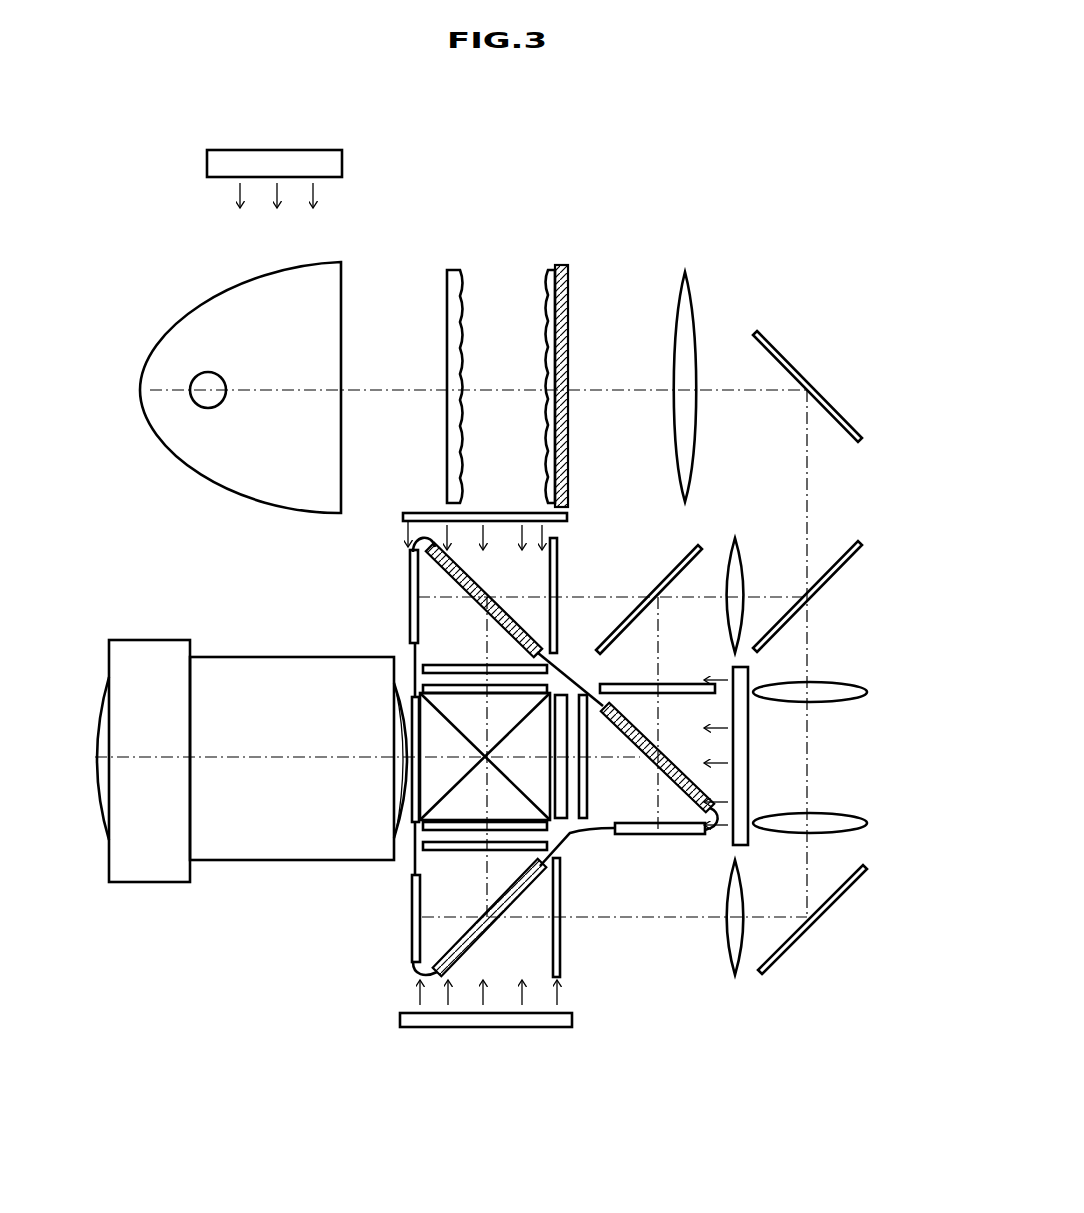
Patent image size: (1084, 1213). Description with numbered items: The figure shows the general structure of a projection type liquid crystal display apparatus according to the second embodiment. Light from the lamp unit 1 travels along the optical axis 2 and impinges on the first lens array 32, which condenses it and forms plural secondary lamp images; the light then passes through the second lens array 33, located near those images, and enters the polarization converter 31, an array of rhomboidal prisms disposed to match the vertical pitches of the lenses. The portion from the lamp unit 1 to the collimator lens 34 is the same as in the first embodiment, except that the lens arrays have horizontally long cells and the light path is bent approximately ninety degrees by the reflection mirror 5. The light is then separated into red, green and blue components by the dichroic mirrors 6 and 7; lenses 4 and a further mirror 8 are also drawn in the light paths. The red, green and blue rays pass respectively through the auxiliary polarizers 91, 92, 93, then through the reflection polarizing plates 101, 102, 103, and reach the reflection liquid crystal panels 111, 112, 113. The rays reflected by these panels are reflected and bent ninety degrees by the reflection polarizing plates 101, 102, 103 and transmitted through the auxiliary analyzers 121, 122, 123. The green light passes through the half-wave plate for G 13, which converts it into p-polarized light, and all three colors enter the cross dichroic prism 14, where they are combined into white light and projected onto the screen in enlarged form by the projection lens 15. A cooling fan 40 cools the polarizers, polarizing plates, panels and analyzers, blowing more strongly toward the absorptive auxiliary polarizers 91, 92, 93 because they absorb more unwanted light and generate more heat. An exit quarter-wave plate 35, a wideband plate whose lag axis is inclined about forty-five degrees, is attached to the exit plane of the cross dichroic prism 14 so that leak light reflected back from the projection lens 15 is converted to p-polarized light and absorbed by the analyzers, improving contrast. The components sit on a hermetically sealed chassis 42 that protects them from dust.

The lamp unit 1 is at (332, 290).
The optical axis 2 is at (383, 390).
The lens 4 is at (835, 702).
The reflection mirror 5 is at (823, 393).
The dichroic mirror 6 is at (823, 590).
The dichroic mirror 7 is at (667, 580).
The mirror 8 is at (830, 898).
The half-wave plate for G 13 is at (575, 834).
The cross dichroic prism 14 is at (410, 830).
The projection lens 15 is at (147, 882).
The polarization converter 31 is at (562, 262).
The first lens array 32 is at (453, 266).
The second lens array 33 is at (548, 265).
The collimator lens 34 is at (700, 420).
The exit quarter-wave plate 35 is at (412, 697).
The cooling fan 40 is at (336, 162).
The hermetically sealed chassis 42 is at (415, 972).
The R light auxiliary polarizer 91 is at (558, 545).
The G light auxiliary polarizer 92 is at (672, 684).
The B light auxiliary polarizer 93 is at (562, 955).
The R light reflection polarizing plate 101 is at (515, 618).
The G light reflection polarizing plate 102 is at (623, 713).
The B light reflection polarizing plate 103 is at (527, 895).
The R light reflection liquid crystal panel 111 is at (410, 578).
The G light reflection liquid crystal panel 112 is at (650, 834).
The B light reflection liquid crystal panel 113 is at (410, 948).
The R light auxiliary analyzer 121 is at (472, 665).
The G light auxiliary analyzer 122 is at (588, 763).
The B light auxiliary analyzer 123 is at (445, 832).